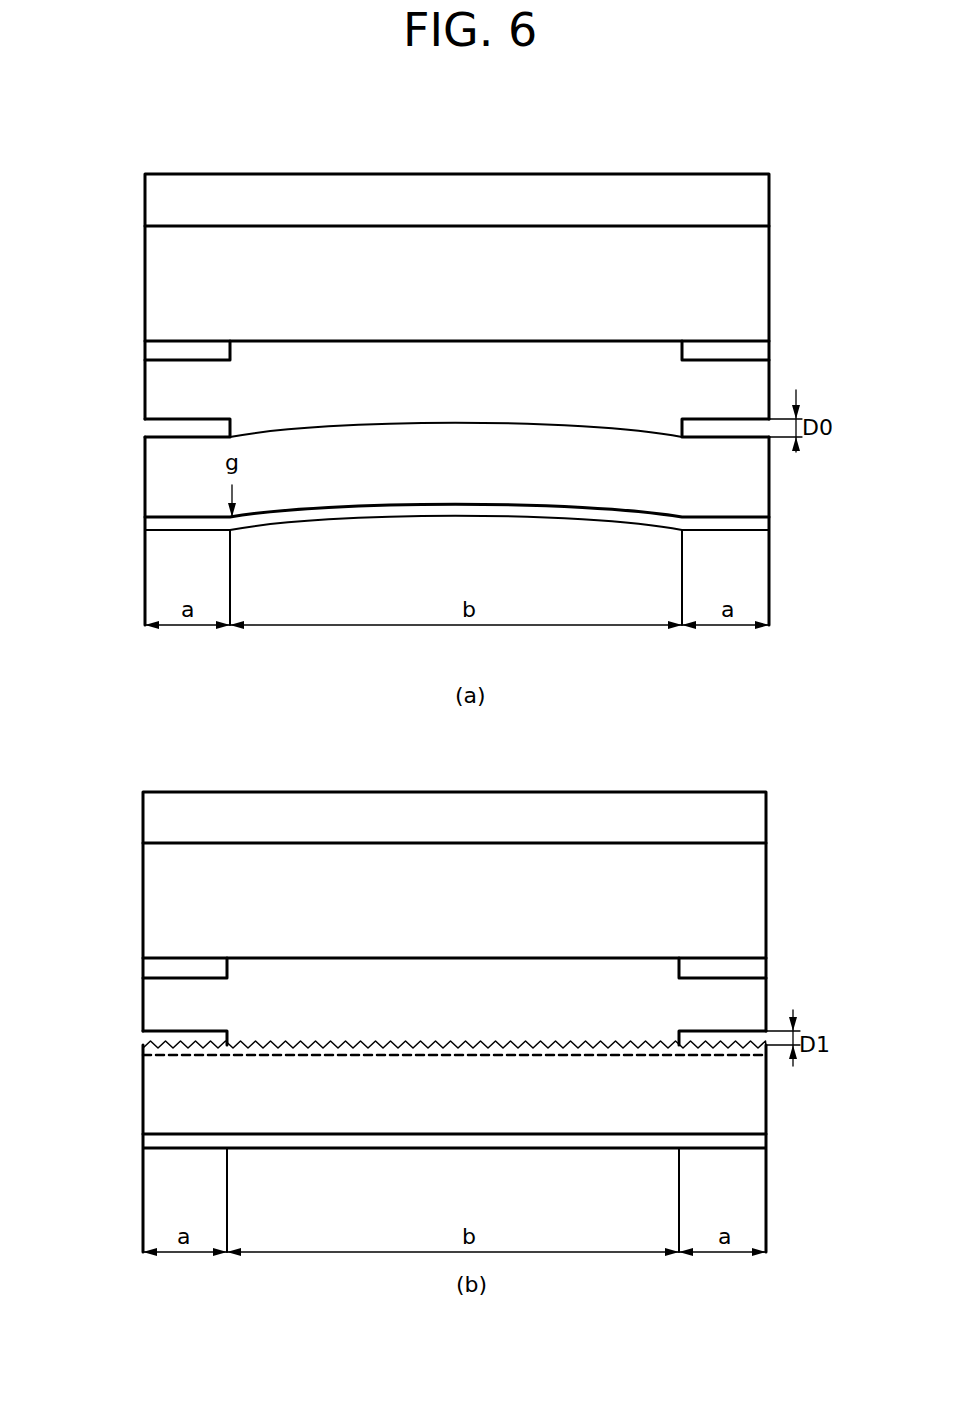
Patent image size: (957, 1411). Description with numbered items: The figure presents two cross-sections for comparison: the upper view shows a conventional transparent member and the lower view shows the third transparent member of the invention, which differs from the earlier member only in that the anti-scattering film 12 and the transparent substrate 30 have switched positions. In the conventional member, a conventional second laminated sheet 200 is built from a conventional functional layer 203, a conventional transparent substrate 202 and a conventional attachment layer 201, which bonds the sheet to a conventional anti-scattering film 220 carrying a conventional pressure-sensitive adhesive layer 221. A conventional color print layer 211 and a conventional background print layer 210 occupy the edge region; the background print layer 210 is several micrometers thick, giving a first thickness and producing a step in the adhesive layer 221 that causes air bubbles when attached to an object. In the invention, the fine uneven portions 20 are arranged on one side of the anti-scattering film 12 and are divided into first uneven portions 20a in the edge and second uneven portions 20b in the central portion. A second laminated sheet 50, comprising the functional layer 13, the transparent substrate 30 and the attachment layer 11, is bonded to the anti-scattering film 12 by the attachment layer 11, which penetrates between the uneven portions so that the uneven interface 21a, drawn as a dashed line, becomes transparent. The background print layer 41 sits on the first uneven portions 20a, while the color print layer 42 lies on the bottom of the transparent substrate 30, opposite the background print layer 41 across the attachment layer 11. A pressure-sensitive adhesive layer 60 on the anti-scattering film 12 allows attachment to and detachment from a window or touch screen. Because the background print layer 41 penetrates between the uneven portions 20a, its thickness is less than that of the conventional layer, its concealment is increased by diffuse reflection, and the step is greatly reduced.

The conventional second laminated sheet 200 is at (658, 113).
The conventional functional layer 203 is at (546, 197).
The conventional transparent substrate 202 is at (587, 265).
The conventional attachment layer 201 is at (617, 372).
The conventional color print layer 211 is at (156, 353).
The conventional background print layer 210 is at (156, 428).
The conventional anti-scattering film 220 is at (765, 481).
The conventional pressure-sensitive adhesive layer 221 is at (765, 526).
The second laminated sheet 50 is at (656, 730).
The functional layer 13 is at (542, 815).
The transparent substrate 30 is at (585, 882).
The attachment layer 11 is at (614, 988).
The color print layer 42 is at (760, 970).
The background print layer 41 is at (720, 1036).
The uneven interface 21a is at (507, 1043).
The anti-scattering film 12 is at (760, 1098).
The pressure-sensitive adhesive layer 60 is at (760, 1145).
The fine uneven portions 20 is at (618, 1196).
The first uneven portions 20a is at (695, 1047).
The second uneven portions 20b is at (540, 1048).